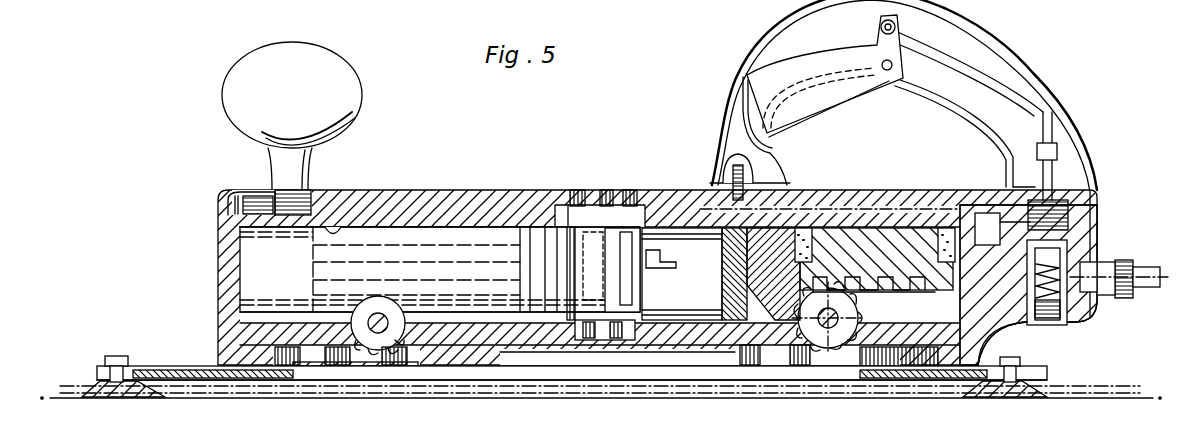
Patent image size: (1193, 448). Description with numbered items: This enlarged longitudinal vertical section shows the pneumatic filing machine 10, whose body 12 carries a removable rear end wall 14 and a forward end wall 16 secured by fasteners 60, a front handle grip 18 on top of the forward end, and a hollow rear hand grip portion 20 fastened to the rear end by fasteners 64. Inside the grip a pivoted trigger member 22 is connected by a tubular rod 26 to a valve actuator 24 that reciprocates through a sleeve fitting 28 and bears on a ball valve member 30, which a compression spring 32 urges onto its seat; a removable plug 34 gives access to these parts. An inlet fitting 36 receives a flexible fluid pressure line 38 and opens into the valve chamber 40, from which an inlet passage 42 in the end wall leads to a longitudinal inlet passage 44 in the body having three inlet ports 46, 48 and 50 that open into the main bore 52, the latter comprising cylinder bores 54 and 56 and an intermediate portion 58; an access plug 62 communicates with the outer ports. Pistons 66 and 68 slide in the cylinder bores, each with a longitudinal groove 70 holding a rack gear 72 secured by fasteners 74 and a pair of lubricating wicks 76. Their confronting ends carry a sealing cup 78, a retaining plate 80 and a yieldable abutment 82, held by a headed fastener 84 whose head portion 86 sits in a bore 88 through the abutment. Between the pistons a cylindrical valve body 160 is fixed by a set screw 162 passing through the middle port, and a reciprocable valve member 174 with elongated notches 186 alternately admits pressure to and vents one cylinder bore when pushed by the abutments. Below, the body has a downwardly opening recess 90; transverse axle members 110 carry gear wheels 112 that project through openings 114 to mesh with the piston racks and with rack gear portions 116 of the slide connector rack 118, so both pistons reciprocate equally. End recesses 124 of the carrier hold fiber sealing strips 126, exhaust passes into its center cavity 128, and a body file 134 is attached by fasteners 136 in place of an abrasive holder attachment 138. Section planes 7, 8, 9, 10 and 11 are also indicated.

The section line 7- 7 is at (200, 334).
The section line 8- 8 is at (693, 230).
The section line 9- 9 is at (555, 143).
The filing machine 10 is at (967, 150).
The section line 11- 11 is at (1050, 145).
The body 12 is at (488, 215).
The end wall 14 is at (1085, 323).
The end wall 16 is at (225, 295).
The front handle grip 18 is at (351, 102).
The rear hand grip portion 20 is at (1068, 100).
The trigger member 22 is at (836, 85).
The valve actuator 24 is at (1050, 190).
The tubular rod 26 is at (1015, 85).
The sleeve fitting 28 is at (1090, 208).
The ball valve member 30 is at (1070, 262).
The compression spring 32 is at (1000, 326).
The removable plug 34 is at (1050, 326).
The inlet fitting 36 is at (1103, 302).
The flexible fluid pressure line 38 is at (1140, 288).
The valve chamber 40 is at (1025, 280).
The inlet passage 42 is at (998, 250).
The inlet passage 44 is at (862, 200).
The inlet port 46 is at (630, 220).
The inlet port 48 is at (618, 250).
The inlet port 50 is at (560, 222).
The main bore 52 is at (316, 205).
The cylinder bore 54 is at (250, 262).
The cylinder bore 56 is at (745, 310).
The intermediate portion 58 is at (614, 322).
The fasteners 60 is at (245, 205).
The access plug 62 is at (580, 192).
The fasteners 64 is at (746, 172).
The piston 66 is at (433, 226).
The piston 68 is at (962, 326).
The groove 70 is at (470, 312).
The rack gear 72 is at (866, 242).
The fasteners 74 is at (835, 242).
The lubricating wicks 76 is at (333, 232).
The sealing cup 78 is at (560, 293).
The retaining plate 80 is at (690, 263).
The yieldable abutment 82 is at (547, 250).
The headed fastener 84 is at (790, 270).
The head portion 86 is at (712, 296).
The bore 88 is at (722, 305).
The recess 90 is at (425, 356).
The axle members 110 is at (382, 314).
The gear wheel 112 is at (375, 300).
The opening 114 is at (878, 368).
The rack gear portions 116 is at (330, 360).
The slide connector rack 118 is at (144, 345).
The recesses 124 is at (268, 380).
The sealing strips 126 is at (207, 368).
The cavity 128 is at (690, 386).
The body file 134 is at (90, 394).
The fasteners 136 is at (108, 358).
The abrasive holder attachment 138 is at (129, 404).
The valve body 160 is at (577, 284).
The set screw 162 is at (614, 193).
The valve member 174 is at (608, 268).
The elongated notches 186 is at (572, 410).